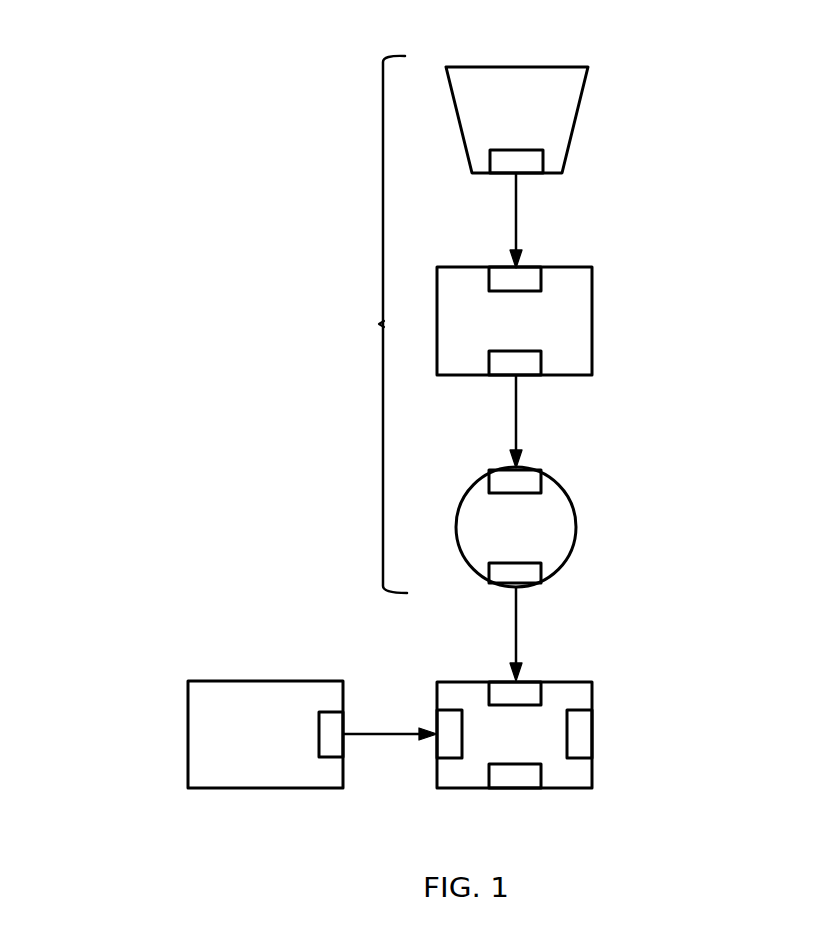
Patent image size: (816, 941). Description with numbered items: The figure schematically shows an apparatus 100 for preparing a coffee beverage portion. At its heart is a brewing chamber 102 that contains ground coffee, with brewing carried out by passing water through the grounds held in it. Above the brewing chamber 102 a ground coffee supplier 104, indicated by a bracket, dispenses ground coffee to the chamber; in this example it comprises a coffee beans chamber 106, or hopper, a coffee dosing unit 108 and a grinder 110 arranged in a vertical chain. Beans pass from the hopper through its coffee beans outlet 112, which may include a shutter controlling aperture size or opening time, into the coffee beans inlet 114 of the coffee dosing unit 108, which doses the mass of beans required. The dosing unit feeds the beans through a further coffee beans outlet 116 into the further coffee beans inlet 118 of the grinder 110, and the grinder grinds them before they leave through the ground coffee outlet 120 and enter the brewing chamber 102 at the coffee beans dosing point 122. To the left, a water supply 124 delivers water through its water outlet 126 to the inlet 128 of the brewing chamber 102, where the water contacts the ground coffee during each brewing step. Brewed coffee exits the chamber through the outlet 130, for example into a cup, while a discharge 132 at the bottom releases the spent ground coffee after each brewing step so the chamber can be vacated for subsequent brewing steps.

The apparatus 100 is at (120, 68).
The brewing chamber 102 is at (592, 693).
The ground coffee supplier 104 is at (379, 324).
The coffee beans chamber 106 is at (577, 122).
The coffee dosing unit 108 is at (593, 333).
The grinder 110 is at (576, 532).
The coffee beans outlet 112 is at (530, 174).
The coffee beans inlet 114 is at (502, 267).
The further coffee beans outlet 116 is at (528, 376).
The further coffee beans inlet 118 is at (500, 468).
The ground coffee outlet 120 is at (525, 588).
The coffee beans dosing point 122 is at (500, 680).
The water supply 124 is at (247, 681).
The water outlet 126 is at (345, 720).
The inlet 128 is at (437, 748).
The outlet 130 is at (592, 735).
The discharge 132 is at (528, 788).